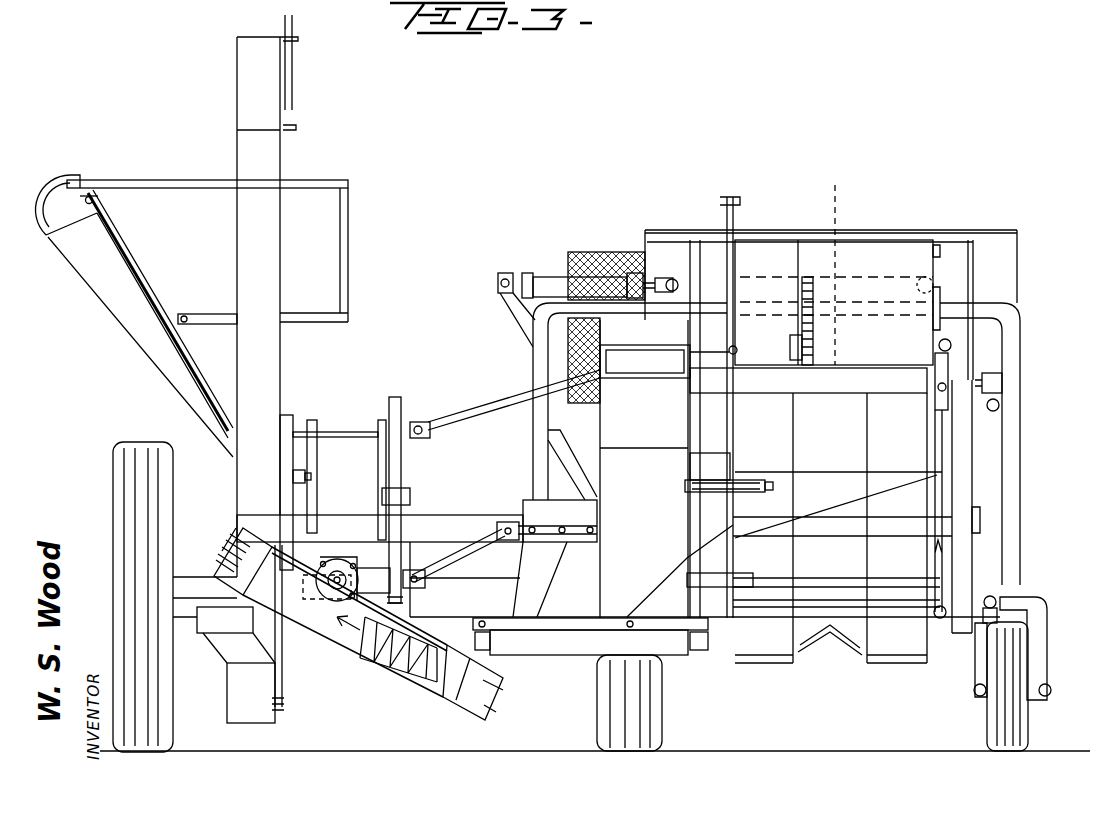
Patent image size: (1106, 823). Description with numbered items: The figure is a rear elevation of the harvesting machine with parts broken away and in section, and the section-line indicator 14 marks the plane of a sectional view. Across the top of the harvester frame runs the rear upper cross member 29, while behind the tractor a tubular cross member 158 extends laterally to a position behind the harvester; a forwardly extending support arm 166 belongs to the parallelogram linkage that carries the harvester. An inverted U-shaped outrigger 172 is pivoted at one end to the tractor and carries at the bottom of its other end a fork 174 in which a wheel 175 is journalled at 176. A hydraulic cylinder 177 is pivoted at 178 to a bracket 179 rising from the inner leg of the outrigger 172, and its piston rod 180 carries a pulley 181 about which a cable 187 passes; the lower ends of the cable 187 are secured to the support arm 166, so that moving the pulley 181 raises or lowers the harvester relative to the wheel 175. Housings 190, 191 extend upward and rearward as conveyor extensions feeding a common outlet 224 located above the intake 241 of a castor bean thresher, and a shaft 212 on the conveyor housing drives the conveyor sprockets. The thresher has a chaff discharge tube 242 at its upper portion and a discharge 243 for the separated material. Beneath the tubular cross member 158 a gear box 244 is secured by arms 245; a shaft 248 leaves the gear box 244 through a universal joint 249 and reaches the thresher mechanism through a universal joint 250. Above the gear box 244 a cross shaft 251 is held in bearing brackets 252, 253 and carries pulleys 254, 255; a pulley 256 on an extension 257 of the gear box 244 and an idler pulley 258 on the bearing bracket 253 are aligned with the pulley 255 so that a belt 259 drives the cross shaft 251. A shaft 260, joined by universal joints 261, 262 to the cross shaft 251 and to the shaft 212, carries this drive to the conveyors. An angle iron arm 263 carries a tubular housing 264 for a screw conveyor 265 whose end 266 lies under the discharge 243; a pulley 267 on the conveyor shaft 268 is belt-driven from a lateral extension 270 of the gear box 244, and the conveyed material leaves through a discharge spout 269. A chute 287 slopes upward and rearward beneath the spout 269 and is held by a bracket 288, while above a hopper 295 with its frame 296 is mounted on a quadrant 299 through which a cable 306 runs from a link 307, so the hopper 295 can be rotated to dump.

The section line 14 is at (852, 205).
The rear upper cross member 29 is at (797, 240).
The tubular cross member 158 is at (445, 520).
The support arm 166 is at (945, 582).
The outrigger 172 is at (530, 451).
The fork 174 is at (1040, 634).
The wheel 175 is at (1026, 720).
The journal 176 is at (1048, 690).
The hydraulic cylinder 177 is at (545, 275).
The pivot 178 is at (505, 275).
The bracket 179 is at (515, 318).
The piston rod 180 is at (655, 275).
The pulley 181 is at (678, 240).
The cable 187 is at (733, 449).
The housing 190 is at (773, 648).
The housing 191 is at (893, 650).
The shaft 212 is at (768, 343).
The common outlet 224 is at (824, 427).
The intake 241 is at (820, 482).
The chaff discharge tube 242 is at (650, 406).
The discharge 243 is at (538, 594).
The gear box 244 is at (345, 622).
The arms 245 is at (345, 548).
The shaft 248 is at (480, 556).
The universal joint 249 is at (422, 588).
The universal joint 250 is at (507, 522).
The cross shaft 251 is at (347, 432).
The bearing bracket 252 is at (308, 456).
The bearing bracket 253 is at (380, 484).
The pulley 254 is at (288, 418).
The pulley 255 is at (405, 381).
The pulley 256 is at (432, 556).
The extension 257 is at (370, 643).
The idler pulley 258 is at (450, 488).
The belt 259 is at (400, 477).
The shaft 260 is at (497, 408).
The universal joint 261 is at (437, 414).
The universal joint 262 is at (668, 361).
The angle iron arm 263 is at (263, 527).
The tubular housing 264 is at (313, 627).
The screw conveyor 265 is at (396, 700).
The end 266 is at (490, 688).
The pulley 267 is at (222, 541).
The shaft 268 is at (390, 677).
The discharge spout 269 is at (213, 588).
The lateral extension 270 is at (279, 532).
The chute 287 is at (218, 670).
The bracket 288 is at (225, 620).
The hopper 295 is at (322, 268).
The frame 296 is at (322, 185).
The quadrant 299 is at (62, 186).
The cable 306 is at (128, 322).
The link 307 is at (96, 197).